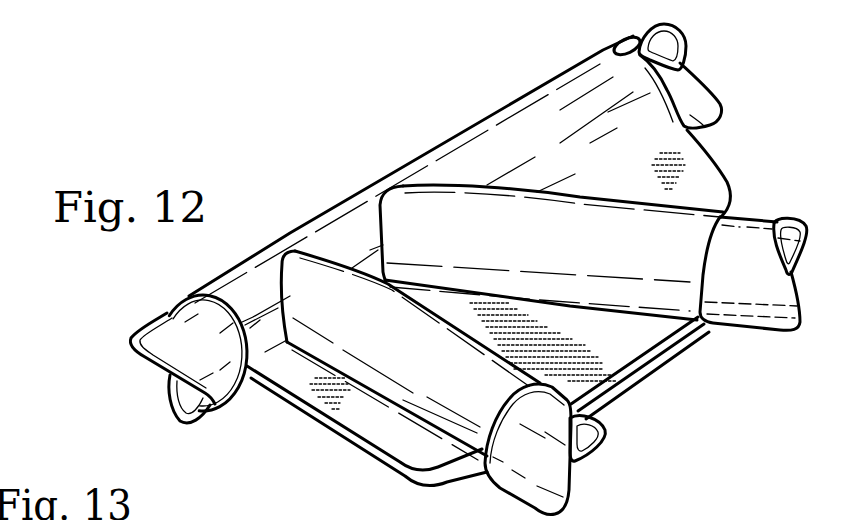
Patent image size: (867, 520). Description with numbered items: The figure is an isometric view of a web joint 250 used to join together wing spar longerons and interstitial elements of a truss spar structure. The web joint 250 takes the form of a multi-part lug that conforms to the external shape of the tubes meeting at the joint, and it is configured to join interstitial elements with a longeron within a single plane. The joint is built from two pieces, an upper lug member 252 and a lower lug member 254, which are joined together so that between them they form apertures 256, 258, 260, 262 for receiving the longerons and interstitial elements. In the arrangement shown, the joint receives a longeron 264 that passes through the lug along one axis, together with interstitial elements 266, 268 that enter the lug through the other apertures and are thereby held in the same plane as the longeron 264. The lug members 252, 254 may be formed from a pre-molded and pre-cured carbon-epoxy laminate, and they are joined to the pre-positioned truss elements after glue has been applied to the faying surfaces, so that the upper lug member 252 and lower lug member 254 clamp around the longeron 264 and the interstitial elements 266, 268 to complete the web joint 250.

The web joint 250 is at (262, 182).
The upper lug member 252 is at (700, 170).
The lower lug member 254 is at (641, 383).
The aperture 256 is at (205, 311).
The aperture 258 is at (638, 48).
The aperture 260 is at (513, 408).
The aperture 262 is at (708, 268).
The longeron 264 is at (155, 331).
The interstitial element 266 is at (533, 492).
The interstitial element 268 is at (757, 310).